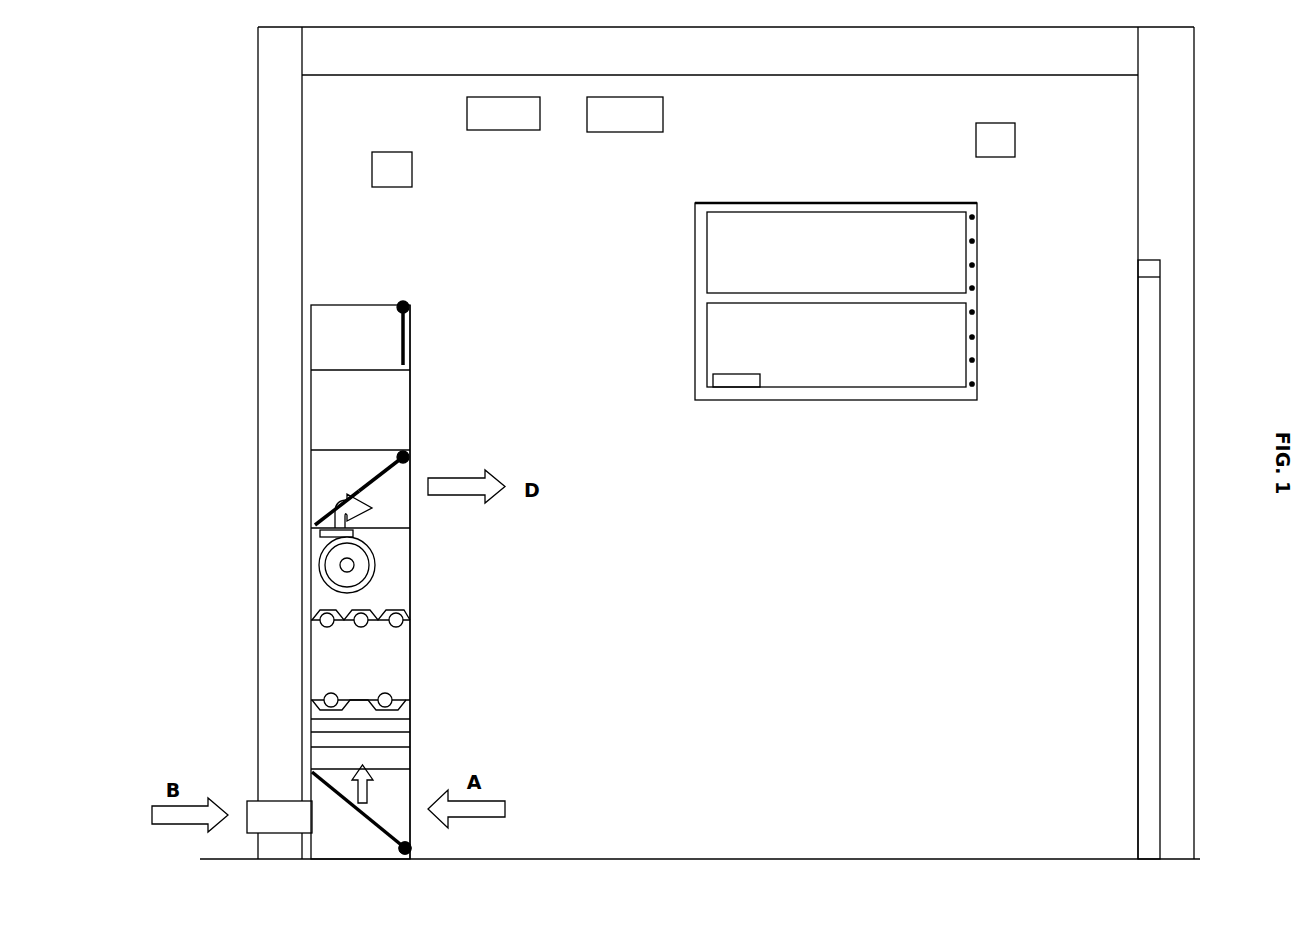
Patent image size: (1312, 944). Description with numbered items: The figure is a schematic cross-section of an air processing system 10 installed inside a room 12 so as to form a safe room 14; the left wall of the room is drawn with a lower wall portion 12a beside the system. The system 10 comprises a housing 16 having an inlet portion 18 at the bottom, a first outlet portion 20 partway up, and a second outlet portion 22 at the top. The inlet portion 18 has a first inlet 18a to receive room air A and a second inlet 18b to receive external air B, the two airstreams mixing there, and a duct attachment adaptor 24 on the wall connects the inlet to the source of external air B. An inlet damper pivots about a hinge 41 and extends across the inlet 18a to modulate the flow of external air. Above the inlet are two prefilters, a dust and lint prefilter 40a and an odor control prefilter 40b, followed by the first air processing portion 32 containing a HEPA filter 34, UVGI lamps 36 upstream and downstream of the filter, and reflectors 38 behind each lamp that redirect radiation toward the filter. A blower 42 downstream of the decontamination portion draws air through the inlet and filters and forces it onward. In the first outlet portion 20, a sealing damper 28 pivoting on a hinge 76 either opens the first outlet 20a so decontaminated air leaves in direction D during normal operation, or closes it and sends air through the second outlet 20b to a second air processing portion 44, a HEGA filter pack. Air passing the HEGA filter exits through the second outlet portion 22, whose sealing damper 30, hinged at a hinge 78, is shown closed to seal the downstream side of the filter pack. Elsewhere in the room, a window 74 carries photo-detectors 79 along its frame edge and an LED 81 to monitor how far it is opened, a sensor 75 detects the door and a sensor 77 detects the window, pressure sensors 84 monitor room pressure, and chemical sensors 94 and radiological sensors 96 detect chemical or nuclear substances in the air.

The air processing system 10 is at (408, 286).
The room 12 is at (339, 128).
The lower portion of column 12a is at (283, 768).
The safe room 14 is at (250, 167).
The housing 16 is at (413, 409).
The inlet portion 18 is at (378, 856).
The first inlet 18a is at (358, 810).
The second inlet 18b is at (383, 787).
The first outlet portion 20 is at (414, 507).
The first outlet 20a is at (363, 508).
The second outlet 20b is at (361, 473).
The second outlet portion 22 is at (345, 303).
The duct attachment adaptor 24 is at (283, 836).
The damper 28 is at (358, 490).
The damper 30 is at (407, 340).
The first air processing portion 32 is at (418, 602).
The HEPA filter 34 is at (324, 660).
The UVGI lamps 36 is at (334, 628).
The reflectors 38 is at (338, 607).
The prefilter 40a is at (414, 742).
The prefilter 40b is at (414, 727).
The hinge 41 is at (418, 846).
The blower 42 is at (378, 560).
The second air processing portion 44 is at (329, 407).
The window 74 is at (861, 201).
The sensor 75 is at (1136, 251).
The hinge 76 is at (411, 457).
The sensor 77 is at (747, 389).
The hinge 78 is at (411, 306).
The photo-detectors 79 is at (980, 205).
The light emitting diode 81 is at (961, 382).
The pressure sensors 84 is at (414, 172).
The chemical sensors 94 is at (519, 132).
The radiological sensors 96 is at (634, 134).